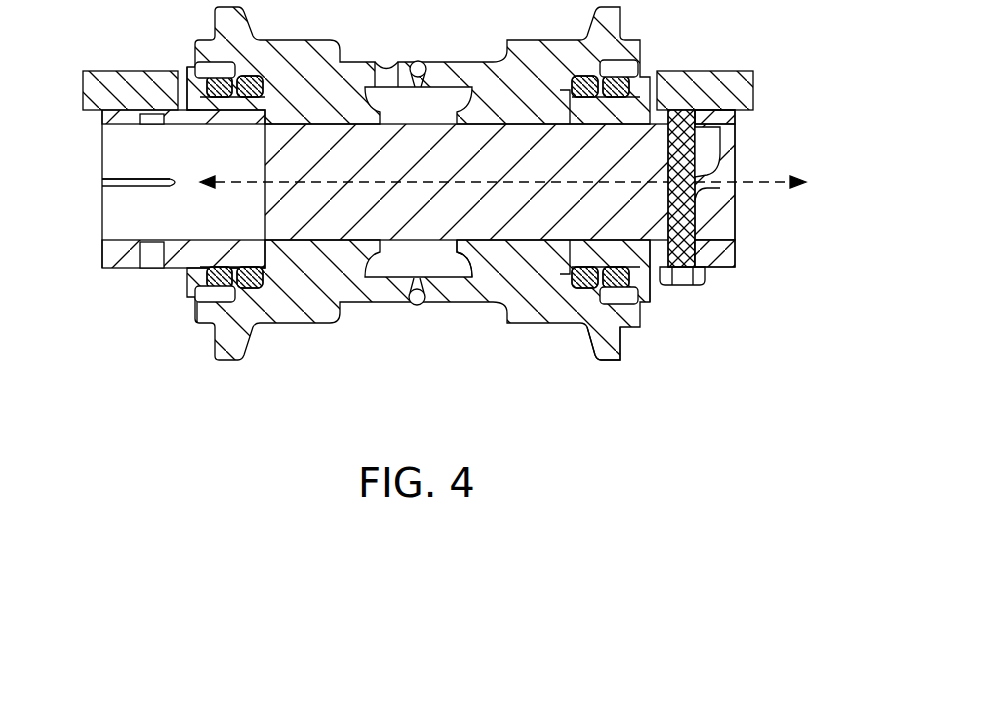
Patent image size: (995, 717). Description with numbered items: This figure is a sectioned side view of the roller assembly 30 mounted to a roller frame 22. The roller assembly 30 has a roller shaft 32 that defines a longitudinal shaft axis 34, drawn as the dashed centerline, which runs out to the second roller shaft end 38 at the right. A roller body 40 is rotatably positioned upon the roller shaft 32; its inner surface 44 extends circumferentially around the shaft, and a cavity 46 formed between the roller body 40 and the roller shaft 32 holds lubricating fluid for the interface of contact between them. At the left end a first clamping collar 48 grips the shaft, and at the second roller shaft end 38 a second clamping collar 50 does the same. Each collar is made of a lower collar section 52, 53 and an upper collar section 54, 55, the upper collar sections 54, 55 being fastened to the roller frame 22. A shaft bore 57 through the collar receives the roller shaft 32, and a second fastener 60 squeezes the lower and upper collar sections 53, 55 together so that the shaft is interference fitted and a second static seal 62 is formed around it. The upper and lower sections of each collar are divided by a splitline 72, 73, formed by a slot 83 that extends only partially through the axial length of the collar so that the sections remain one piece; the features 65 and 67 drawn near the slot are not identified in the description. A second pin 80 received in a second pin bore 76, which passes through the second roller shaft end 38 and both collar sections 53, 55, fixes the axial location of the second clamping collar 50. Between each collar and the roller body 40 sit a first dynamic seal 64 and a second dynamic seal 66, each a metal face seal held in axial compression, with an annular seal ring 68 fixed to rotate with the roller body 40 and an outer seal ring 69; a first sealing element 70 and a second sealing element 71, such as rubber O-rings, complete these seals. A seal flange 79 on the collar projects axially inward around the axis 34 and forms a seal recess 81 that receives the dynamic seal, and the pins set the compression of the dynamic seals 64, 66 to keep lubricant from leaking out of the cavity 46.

The roller frame 22 is at (101, 72).
The roller assembly 30 is at (813, 72).
The roller shaft 32 is at (330, 132).
The longitudinal shaft axis 34 is at (340, 192).
The second roller shaft end 38 is at (736, 230).
The roller body 40 is at (506, 325).
The inner surface 44 is at (500, 242).
The cavity 46 is at (410, 290).
The first clamping collar 48 is at (110, 270).
The second clamping collar 50 is at (725, 270).
The lower collar section 52 is at (178, 270).
The lower collar section 53 is at (592, 325).
The upper collar section 54 is at (184, 106).
The upper collar section 55 is at (640, 76).
The shaft bore 57 is at (556, 124).
The second fastener 60 is at (694, 288).
The second static seal 62 is at (654, 240).
The first dynamic seal 64 is at (214, 296).
The slot 65 is at (162, 190).
The second dynamic seal 66 is at (577, 64).
The slot opening 67 is at (100, 182).
The annular seal ring 68 is at (222, 322).
The outer seal ring 69 is at (256, 308).
The first sealing element 70 is at (201, 42).
The second sealing element 71 is at (265, 40).
The splitline 72 is at (99, 187).
The splitline 73 is at (725, 182).
The second pin bore 76 is at (688, 118).
The seal flange 79 is at (620, 64).
The second pin 80 is at (722, 190).
The seal recess 81 is at (600, 284).
The slot 83 is at (116, 180).